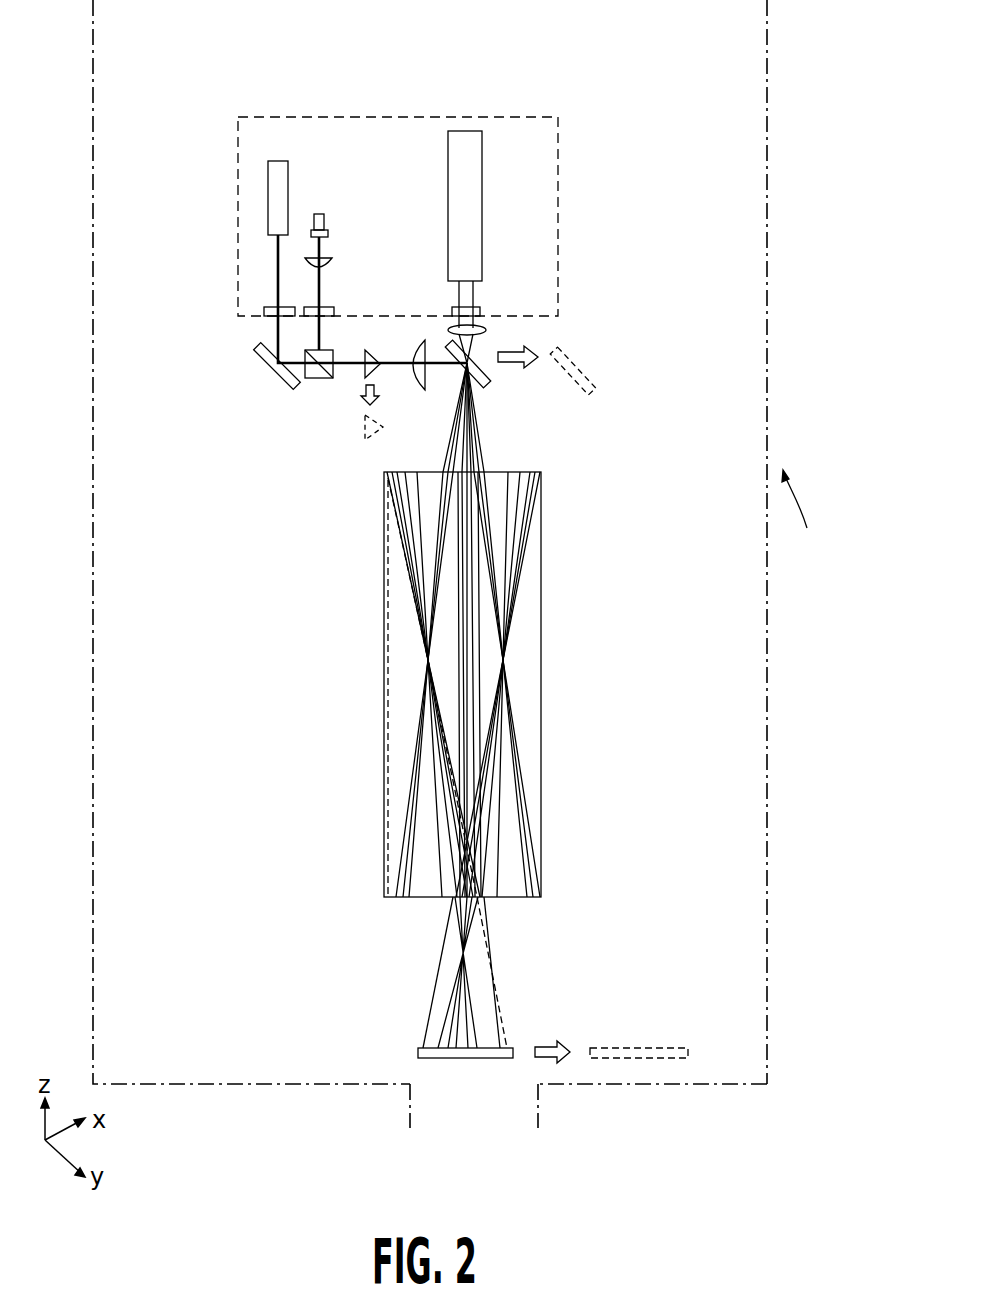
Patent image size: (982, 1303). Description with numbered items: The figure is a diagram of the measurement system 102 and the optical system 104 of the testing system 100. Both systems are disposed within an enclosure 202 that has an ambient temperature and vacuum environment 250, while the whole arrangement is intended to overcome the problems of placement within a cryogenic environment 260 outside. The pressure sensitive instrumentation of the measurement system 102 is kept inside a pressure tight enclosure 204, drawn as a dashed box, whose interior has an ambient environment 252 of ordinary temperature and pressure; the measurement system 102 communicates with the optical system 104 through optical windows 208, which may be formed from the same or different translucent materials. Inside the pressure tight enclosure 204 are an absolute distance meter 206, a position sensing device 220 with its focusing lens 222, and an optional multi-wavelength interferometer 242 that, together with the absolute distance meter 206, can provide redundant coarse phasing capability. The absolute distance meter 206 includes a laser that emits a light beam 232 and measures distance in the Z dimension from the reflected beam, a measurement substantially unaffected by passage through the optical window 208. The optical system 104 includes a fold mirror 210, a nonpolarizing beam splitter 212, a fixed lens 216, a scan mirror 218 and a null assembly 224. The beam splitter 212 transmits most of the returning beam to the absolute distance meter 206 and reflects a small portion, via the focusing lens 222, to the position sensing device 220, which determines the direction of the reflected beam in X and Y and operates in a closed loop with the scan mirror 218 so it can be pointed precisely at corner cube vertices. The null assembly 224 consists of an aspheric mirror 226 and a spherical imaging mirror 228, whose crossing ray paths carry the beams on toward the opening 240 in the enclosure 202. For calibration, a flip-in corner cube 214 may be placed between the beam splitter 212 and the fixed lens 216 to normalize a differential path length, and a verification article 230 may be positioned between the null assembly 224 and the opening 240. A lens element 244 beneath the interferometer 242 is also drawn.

The testing system 100 is at (803, 117).
The measurement system 102 is at (594, 92).
The optical system 104 is at (221, 835).
The enclosure 202 is at (766, 657).
The pressure tight enclosure (PTE) 204 is at (243, 116).
The absolute distance meter (ADM) 206 is at (268, 185).
The optical windows 208 is at (310, 307).
The fold mirror 210 is at (258, 352).
The nonpolarizing beam splitter 212 is at (320, 378).
The flip-in corner cube 214 is at (365, 427).
The fixed lens 216 is at (417, 388).
The scan mirror 218 is at (489, 384).
The position sensing device 220 is at (320, 213).
The focusing lens 222 is at (333, 262).
The null assembly 224 is at (565, 685).
The aspheric mirror 226 is at (542, 897).
The spherical imaging mirror 228 is at (539, 470).
The verification article 230 is at (418, 1050).
The light beam 232 is at (276, 337).
The opening 240 is at (475, 1110).
The multi-wavelength interferometer 242 is at (455, 131).
The focusing lens 244 is at (486, 330).
The ambient temperature and vacuum environment 250 is at (735, 826).
The ambient environment 252 is at (560, 143).
The cryogenic environment 260 is at (806, 515).